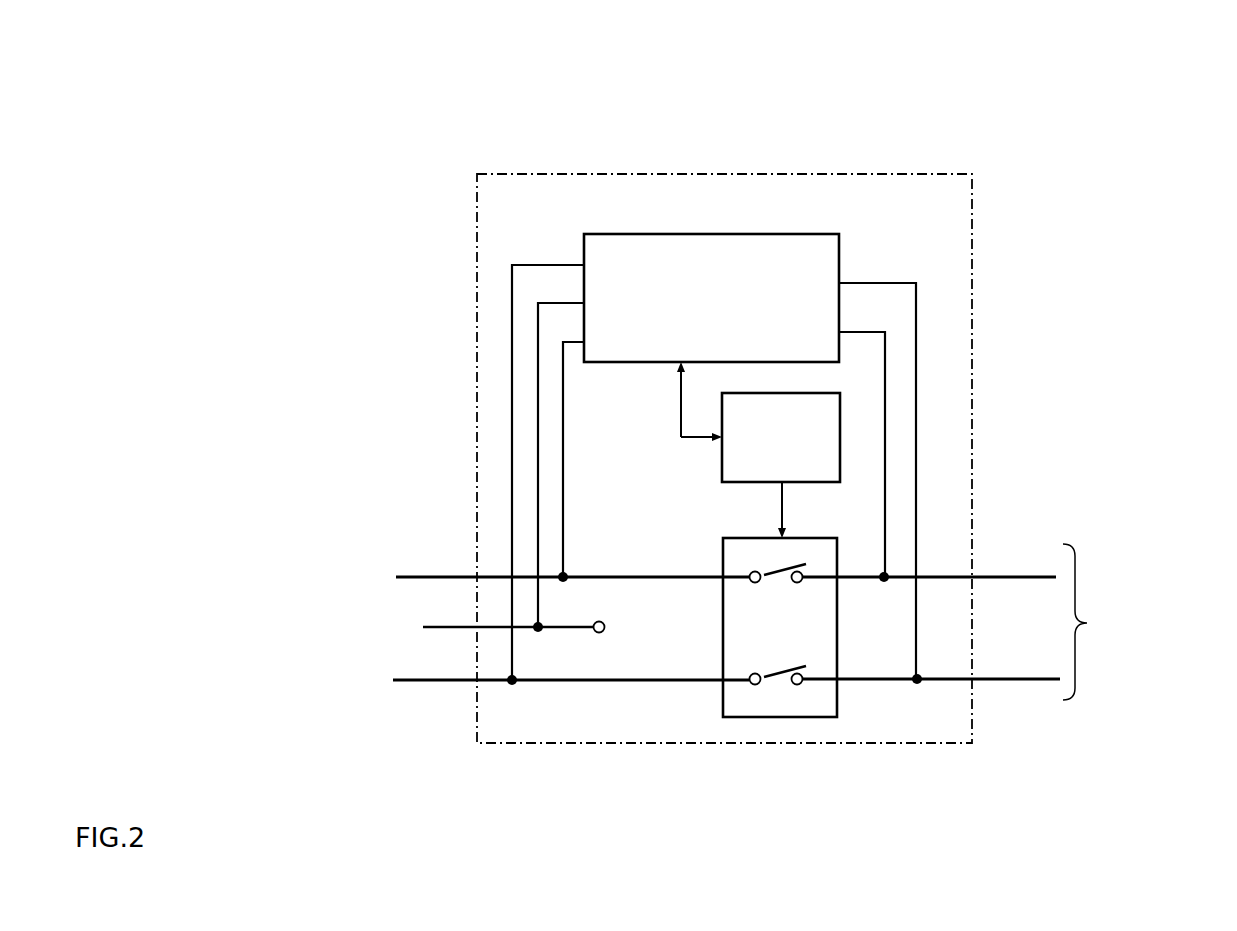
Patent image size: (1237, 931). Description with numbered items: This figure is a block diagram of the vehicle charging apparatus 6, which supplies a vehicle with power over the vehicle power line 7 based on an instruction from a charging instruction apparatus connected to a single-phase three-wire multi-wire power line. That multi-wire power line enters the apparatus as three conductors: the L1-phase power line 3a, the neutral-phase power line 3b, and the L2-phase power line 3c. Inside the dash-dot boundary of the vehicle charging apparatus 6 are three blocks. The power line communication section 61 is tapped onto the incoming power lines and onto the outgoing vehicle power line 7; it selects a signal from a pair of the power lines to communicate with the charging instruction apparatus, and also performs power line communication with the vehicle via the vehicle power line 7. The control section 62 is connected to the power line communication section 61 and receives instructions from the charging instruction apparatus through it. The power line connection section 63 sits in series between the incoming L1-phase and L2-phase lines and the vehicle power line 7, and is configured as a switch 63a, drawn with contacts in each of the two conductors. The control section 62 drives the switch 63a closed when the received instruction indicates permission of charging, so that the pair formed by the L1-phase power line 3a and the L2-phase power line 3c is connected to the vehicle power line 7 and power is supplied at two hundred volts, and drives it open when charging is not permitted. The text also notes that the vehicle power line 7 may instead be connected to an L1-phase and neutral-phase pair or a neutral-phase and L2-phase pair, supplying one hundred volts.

The L1-phase power line 3a is at (445, 575).
The neutral-phase power line 3b is at (450, 628).
The L2-phase power line 3c is at (453, 681).
The vehicle charging apparatus 6 is at (580, 173).
The power line communication section 61 is at (782, 234).
The control section 62 is at (720, 462).
The power line connection section 63 is at (796, 693).
The switch 63a is at (784, 680).
The vehicle power line 7 is at (1020, 677).